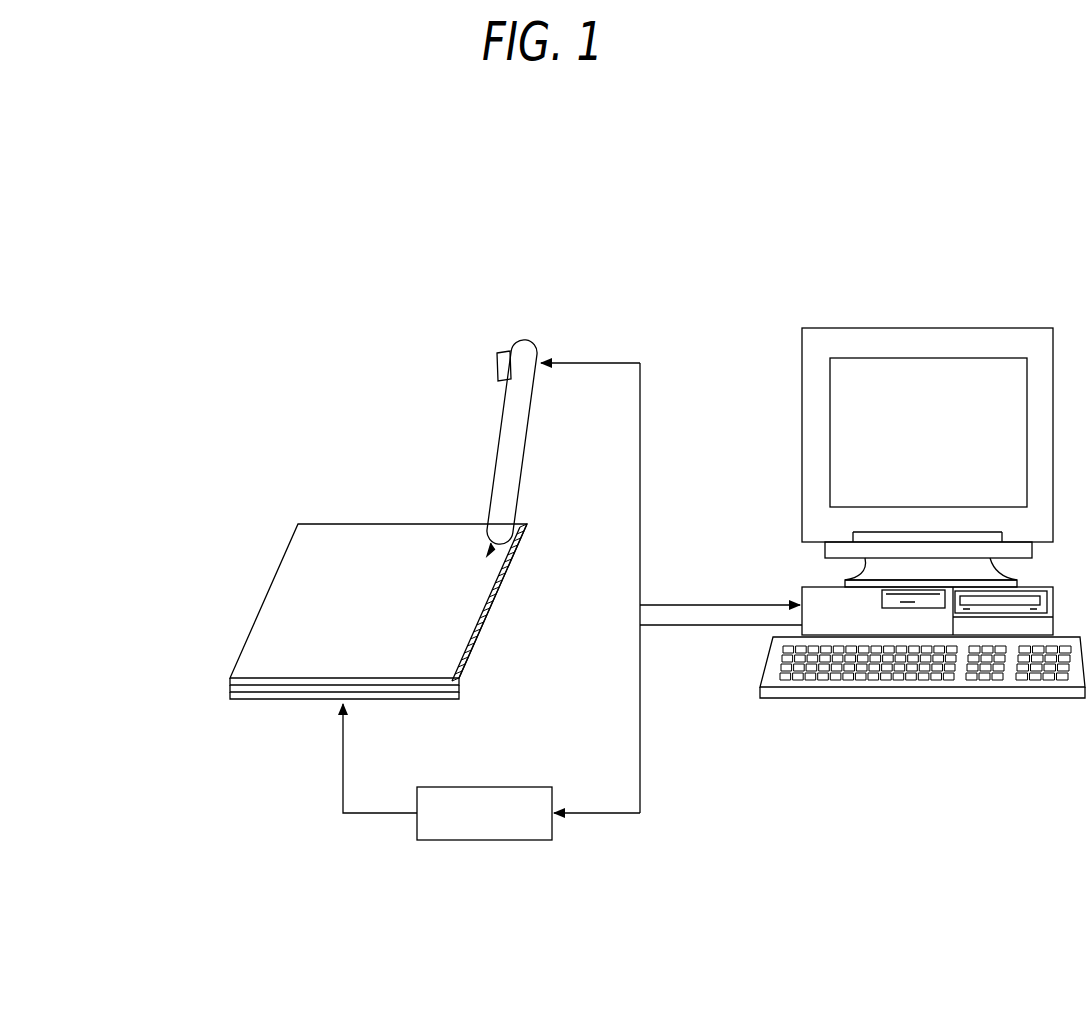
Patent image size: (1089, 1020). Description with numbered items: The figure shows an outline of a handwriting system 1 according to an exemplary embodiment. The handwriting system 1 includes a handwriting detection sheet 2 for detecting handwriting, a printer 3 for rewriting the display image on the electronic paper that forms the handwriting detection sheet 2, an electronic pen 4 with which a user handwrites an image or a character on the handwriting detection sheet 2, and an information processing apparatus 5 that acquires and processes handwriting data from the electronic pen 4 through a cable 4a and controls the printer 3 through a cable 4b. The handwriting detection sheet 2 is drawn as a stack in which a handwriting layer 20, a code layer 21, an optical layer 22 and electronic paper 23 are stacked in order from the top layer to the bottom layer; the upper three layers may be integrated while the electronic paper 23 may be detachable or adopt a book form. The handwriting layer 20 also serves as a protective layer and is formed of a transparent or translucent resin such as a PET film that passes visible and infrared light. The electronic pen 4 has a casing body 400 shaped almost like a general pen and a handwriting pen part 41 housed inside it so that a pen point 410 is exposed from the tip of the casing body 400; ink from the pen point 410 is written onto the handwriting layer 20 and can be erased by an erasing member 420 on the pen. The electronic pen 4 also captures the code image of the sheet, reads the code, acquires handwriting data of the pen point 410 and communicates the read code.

The handwriting system 1 is at (622, 264).
The handwriting detection sheet 2 is at (299, 632).
The handwriting layer 20 is at (252, 627).
The code layer 21 is at (232, 684).
The optical layer 22 is at (234, 691).
The electronic paper 23 is at (295, 716).
The printer 3 is at (491, 841).
The electronic pen 4 is at (463, 416).
The casing body 400 is at (494, 470).
The pen point 410 is at (488, 550).
The erasing member 420 is at (499, 355).
The handwriting pen part 41 is at (500, 566).
The cable 4a is at (688, 605).
The cable 4b is at (641, 762).
The information processing apparatus 5 is at (951, 345).